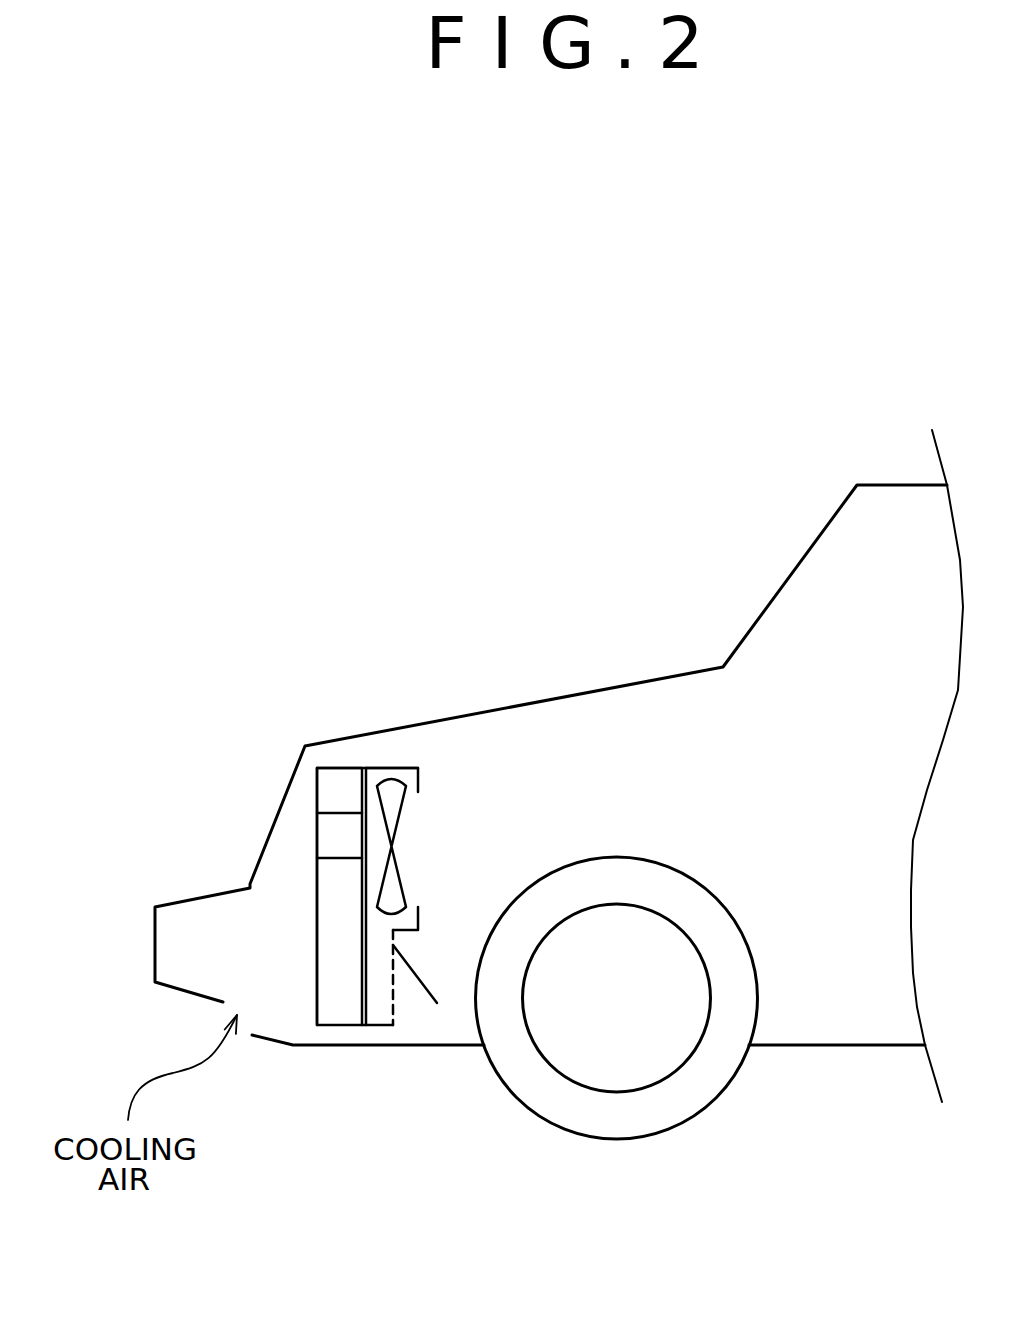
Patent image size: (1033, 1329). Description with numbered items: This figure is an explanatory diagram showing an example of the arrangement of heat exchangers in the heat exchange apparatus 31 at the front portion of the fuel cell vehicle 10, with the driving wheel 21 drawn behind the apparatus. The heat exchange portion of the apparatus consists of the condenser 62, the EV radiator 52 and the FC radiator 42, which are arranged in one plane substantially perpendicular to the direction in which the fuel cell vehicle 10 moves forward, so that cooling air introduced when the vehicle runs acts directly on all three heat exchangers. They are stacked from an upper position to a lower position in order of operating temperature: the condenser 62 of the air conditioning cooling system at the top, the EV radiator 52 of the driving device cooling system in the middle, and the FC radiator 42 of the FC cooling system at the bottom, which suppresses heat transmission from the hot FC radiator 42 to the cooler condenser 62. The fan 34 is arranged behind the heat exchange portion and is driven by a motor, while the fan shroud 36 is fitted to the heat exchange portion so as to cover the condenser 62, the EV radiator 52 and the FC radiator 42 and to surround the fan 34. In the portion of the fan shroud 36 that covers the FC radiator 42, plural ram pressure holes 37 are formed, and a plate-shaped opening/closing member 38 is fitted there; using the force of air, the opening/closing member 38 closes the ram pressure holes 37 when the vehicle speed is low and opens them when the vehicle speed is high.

The fuel cell vehicle 10 is at (600, 687).
The driving wheel 21 is at (660, 862).
The heat exchange apparatus 31 is at (215, 790).
The fan 34 is at (397, 863).
The fan shroud 36 is at (412, 766).
The ram pressure holes 37 is at (410, 1003).
The opening/closing member 38 is at (425, 973).
The FC radiator 42 is at (348, 1025).
The EV radiator 52 is at (315, 832).
The condenser 62 is at (340, 768).